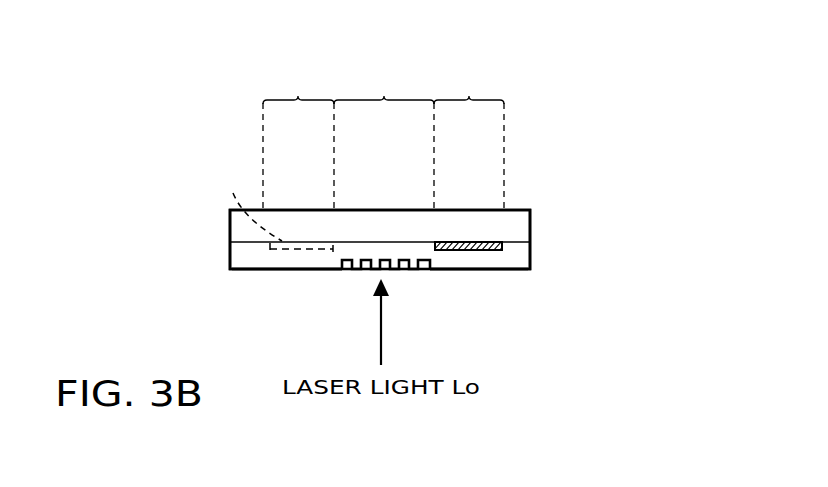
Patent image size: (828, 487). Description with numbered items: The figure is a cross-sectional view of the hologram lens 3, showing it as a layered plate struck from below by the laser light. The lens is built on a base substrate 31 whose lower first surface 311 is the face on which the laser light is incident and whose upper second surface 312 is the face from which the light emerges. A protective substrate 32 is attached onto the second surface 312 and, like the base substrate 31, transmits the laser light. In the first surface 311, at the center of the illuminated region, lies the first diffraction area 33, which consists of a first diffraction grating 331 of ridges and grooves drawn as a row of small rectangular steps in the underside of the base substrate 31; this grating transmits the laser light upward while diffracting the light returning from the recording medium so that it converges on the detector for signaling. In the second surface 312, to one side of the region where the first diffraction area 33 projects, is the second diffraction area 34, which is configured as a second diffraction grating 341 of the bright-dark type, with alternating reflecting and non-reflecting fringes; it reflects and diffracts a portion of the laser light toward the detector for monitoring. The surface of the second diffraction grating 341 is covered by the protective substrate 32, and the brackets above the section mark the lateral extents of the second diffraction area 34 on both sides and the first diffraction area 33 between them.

The hologram lens 3 is at (567, 99).
The base substrate 31 is at (530, 263).
The first surface 311 is at (483, 269).
The second surface 312 is at (530, 246).
The protective substrate 32 is at (530, 227).
The first diffraction area 33 is at (364, 252).
The first diffraction grating 331 is at (370, 266).
The second diffraction area 34 is at (448, 322).
The second diffraction grating 341 is at (525, 168).